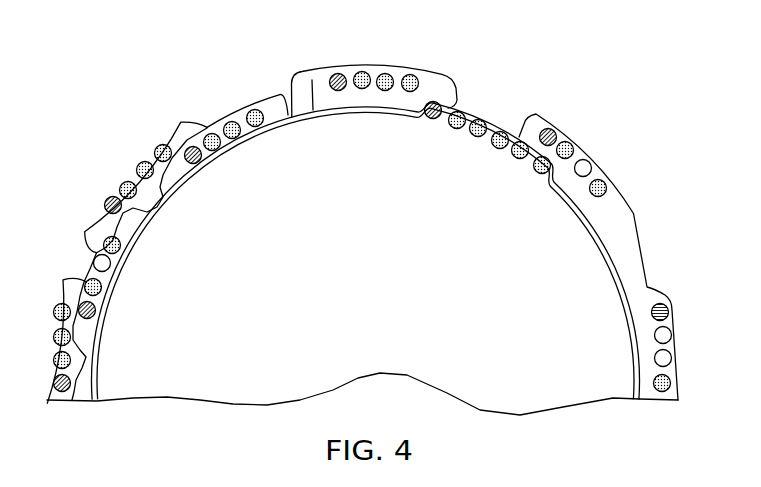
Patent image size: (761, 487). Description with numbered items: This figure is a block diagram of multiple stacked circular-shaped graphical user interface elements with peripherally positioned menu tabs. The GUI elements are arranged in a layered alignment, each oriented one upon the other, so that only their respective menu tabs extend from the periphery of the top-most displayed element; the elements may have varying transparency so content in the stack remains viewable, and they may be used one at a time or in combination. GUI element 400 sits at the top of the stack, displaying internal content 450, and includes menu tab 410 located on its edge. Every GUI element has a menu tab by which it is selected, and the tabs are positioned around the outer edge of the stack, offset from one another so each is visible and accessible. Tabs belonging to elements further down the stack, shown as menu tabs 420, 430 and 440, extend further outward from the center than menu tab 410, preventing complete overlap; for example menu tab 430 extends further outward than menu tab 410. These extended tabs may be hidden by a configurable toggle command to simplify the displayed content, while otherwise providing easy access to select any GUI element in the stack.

The GUI element 400 is at (289, 167).
The menu tab 410 is at (500, 123).
The menu tab 420 is at (628, 203).
The menu tab 430 is at (427, 72).
The menu tab 440 is at (168, 133).
The internal content 450 is at (283, 100).